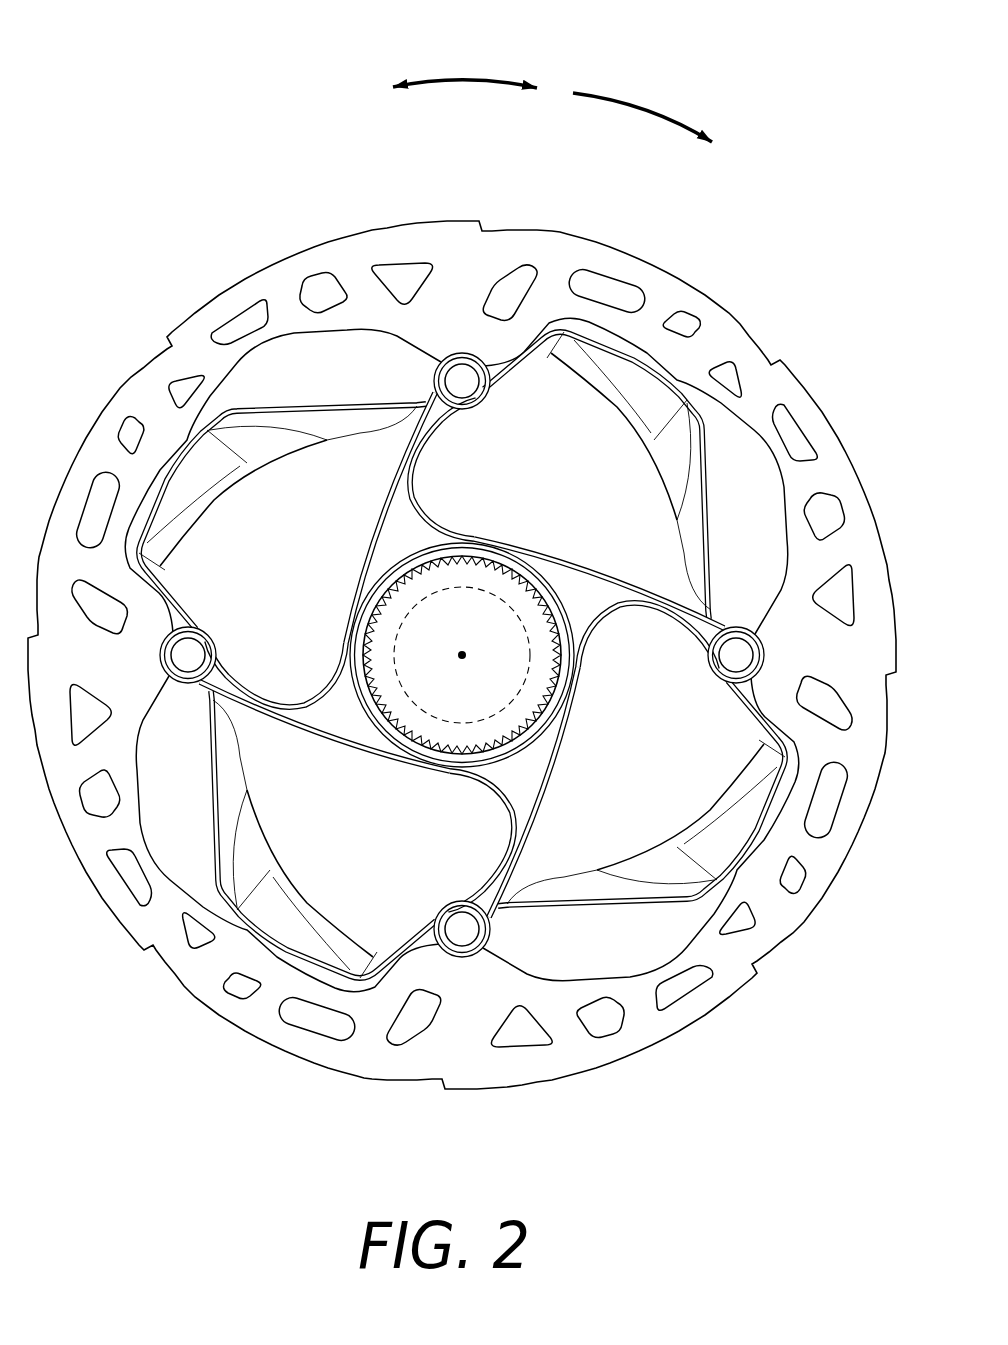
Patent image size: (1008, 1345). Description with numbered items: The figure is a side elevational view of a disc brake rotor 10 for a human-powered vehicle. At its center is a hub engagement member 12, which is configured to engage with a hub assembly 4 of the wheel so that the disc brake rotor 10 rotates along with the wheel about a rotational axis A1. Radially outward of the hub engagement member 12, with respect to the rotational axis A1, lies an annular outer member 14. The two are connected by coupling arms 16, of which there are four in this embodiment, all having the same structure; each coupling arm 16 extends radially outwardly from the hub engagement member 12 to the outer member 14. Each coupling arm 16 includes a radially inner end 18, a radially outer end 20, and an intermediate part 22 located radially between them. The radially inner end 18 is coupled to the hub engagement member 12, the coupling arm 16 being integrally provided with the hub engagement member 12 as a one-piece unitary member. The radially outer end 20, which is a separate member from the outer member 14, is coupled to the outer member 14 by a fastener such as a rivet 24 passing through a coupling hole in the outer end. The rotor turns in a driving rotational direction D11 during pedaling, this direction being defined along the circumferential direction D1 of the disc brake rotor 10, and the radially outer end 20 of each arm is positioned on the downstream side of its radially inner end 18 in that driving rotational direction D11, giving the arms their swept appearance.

The disc brake rotor 10 is at (462, 593).
The hub engagement member 12 is at (506, 536).
The outer member 14 is at (321, 225).
The coupling arm 16 is at (357, 487).
The radially inner end 18 is at (383, 557).
The radially outer end 20 is at (467, 405).
The intermediate part 22 is at (408, 466).
The rivet 24 is at (466, 382).
The hub assembly 4 is at (522, 643).
The rotational axis A1 is at (460, 663).
The circumferential direction D1 is at (448, 82).
The driving rotational direction D11 is at (640, 108).